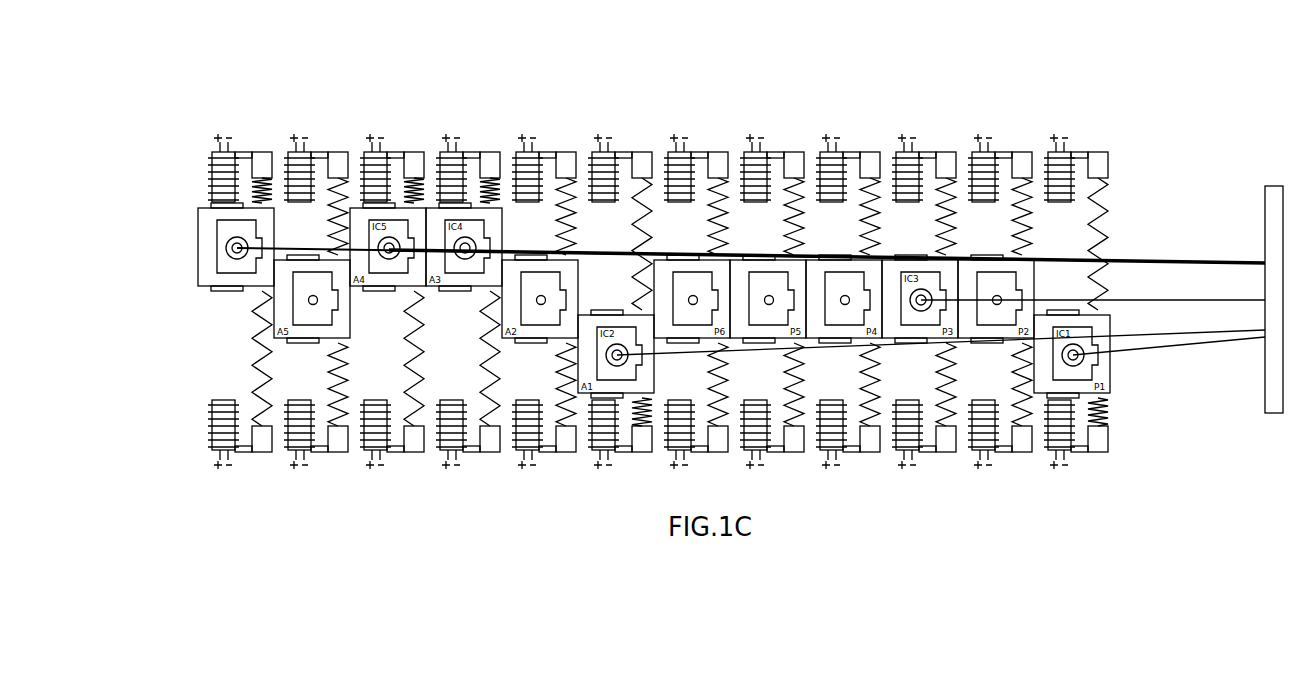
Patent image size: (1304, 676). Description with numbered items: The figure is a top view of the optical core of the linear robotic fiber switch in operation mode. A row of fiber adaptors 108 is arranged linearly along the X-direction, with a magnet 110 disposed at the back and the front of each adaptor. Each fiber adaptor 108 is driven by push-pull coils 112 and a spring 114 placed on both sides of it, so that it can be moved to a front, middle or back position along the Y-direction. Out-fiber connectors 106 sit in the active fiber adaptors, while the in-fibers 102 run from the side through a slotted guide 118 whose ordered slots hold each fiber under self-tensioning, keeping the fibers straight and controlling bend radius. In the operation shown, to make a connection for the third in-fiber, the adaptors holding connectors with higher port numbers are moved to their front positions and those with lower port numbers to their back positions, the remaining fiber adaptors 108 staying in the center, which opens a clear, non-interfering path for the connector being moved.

The in-fiber 102 is at (751, 278).
The out-fiber connector 106 is at (175, 314).
The fiber adaptor 108 is at (184, 247).
The magnet 110 is at (186, 165).
The push-pull coil 112 is at (245, 116).
The spring 114 is at (1160, 427).
The slotted guide 118 is at (1201, 274).